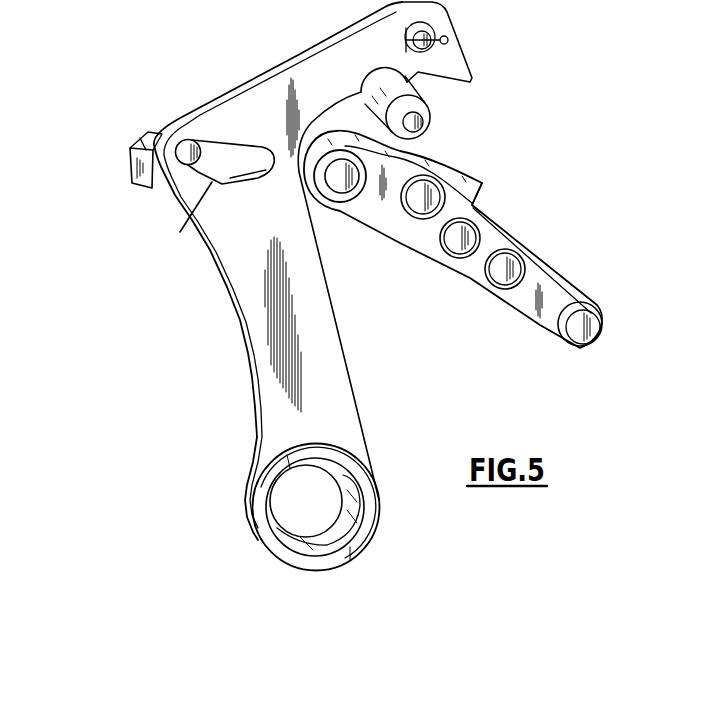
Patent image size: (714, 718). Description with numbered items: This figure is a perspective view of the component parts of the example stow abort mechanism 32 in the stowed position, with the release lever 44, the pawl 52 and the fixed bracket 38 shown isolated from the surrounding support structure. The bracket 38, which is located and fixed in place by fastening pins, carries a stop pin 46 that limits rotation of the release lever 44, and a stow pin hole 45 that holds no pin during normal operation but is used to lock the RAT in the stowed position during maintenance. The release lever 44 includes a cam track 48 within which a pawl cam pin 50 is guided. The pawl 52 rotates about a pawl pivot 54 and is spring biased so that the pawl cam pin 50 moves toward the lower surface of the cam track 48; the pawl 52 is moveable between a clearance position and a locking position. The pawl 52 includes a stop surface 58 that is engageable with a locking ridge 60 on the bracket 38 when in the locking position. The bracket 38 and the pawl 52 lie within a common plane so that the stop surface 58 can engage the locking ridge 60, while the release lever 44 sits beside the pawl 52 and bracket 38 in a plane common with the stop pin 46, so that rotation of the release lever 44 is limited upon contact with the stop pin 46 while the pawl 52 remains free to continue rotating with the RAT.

The lever arm assembly 32 is at (168, 468).
The bracket 38 is at (516, 229).
The release lever 44 is at (237, 371).
The stow pin hole 45 is at (343, 190).
The stop pin 46 is at (601, 354).
The cam track 48 is at (186, 229).
The pawl cam pin 50 is at (183, 128).
The pawl 52 is at (138, 133).
The pawl pivot 54 is at (446, 113).
The stop surface 58 is at (119, 171).
The locking ridge 60 is at (496, 192).